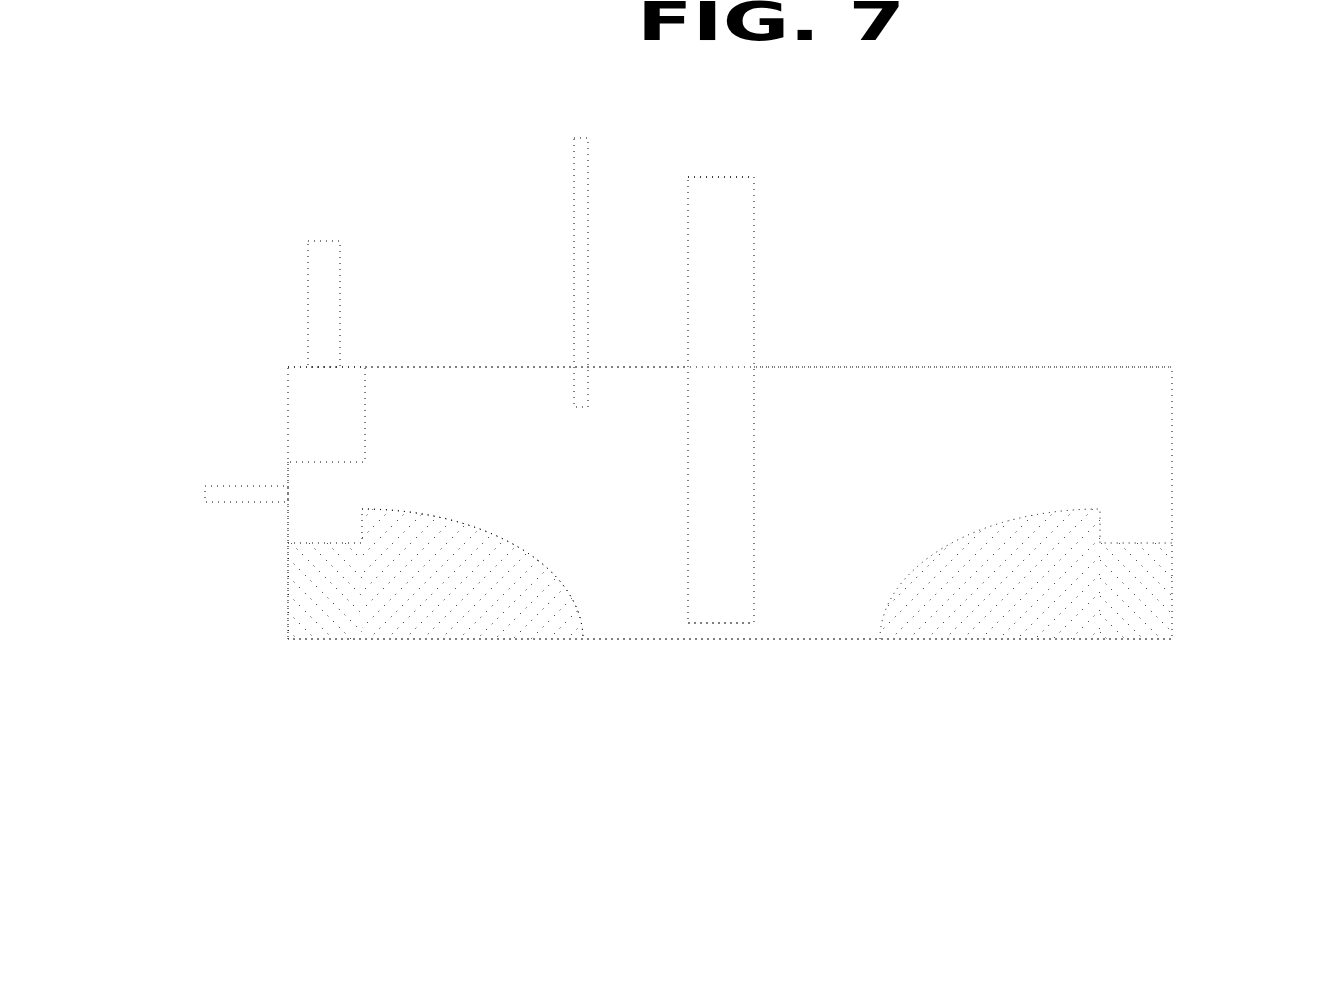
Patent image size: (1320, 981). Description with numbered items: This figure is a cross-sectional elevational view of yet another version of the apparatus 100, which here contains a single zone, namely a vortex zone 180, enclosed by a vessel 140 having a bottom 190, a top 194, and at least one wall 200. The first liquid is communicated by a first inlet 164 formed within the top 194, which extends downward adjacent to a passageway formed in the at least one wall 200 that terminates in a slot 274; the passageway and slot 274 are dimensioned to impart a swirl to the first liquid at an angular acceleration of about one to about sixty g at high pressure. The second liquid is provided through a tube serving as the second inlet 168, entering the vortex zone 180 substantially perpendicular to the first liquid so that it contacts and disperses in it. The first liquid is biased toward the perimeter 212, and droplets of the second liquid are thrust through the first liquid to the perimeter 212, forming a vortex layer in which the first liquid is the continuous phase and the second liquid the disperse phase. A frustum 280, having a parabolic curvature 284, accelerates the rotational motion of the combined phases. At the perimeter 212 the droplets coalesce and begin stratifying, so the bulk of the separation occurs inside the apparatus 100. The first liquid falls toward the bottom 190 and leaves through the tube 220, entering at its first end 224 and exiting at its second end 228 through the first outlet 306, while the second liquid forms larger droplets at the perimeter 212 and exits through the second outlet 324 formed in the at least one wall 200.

The apparatus 100 is at (1031, 197).
The vessel 140 is at (1118, 378).
The first inlet 164 is at (343, 248).
The second inlet 168 is at (590, 140).
The vortex zone 180 is at (842, 537).
The bottom 190 is at (735, 622).
The top 194 is at (835, 367).
The at least one wall 200 is at (288, 430).
The perimeter 212 is at (298, 512).
The tube 220 is at (740, 452).
The first end 224 is at (750, 628).
The second end 228 is at (715, 198).
The slot 274 is at (400, 367).
The frustum 280 is at (430, 612).
The parabolic curvature 284 is at (548, 580).
The first outlet 306 is at (663, 161).
The second outlet 324 is at (238, 505).